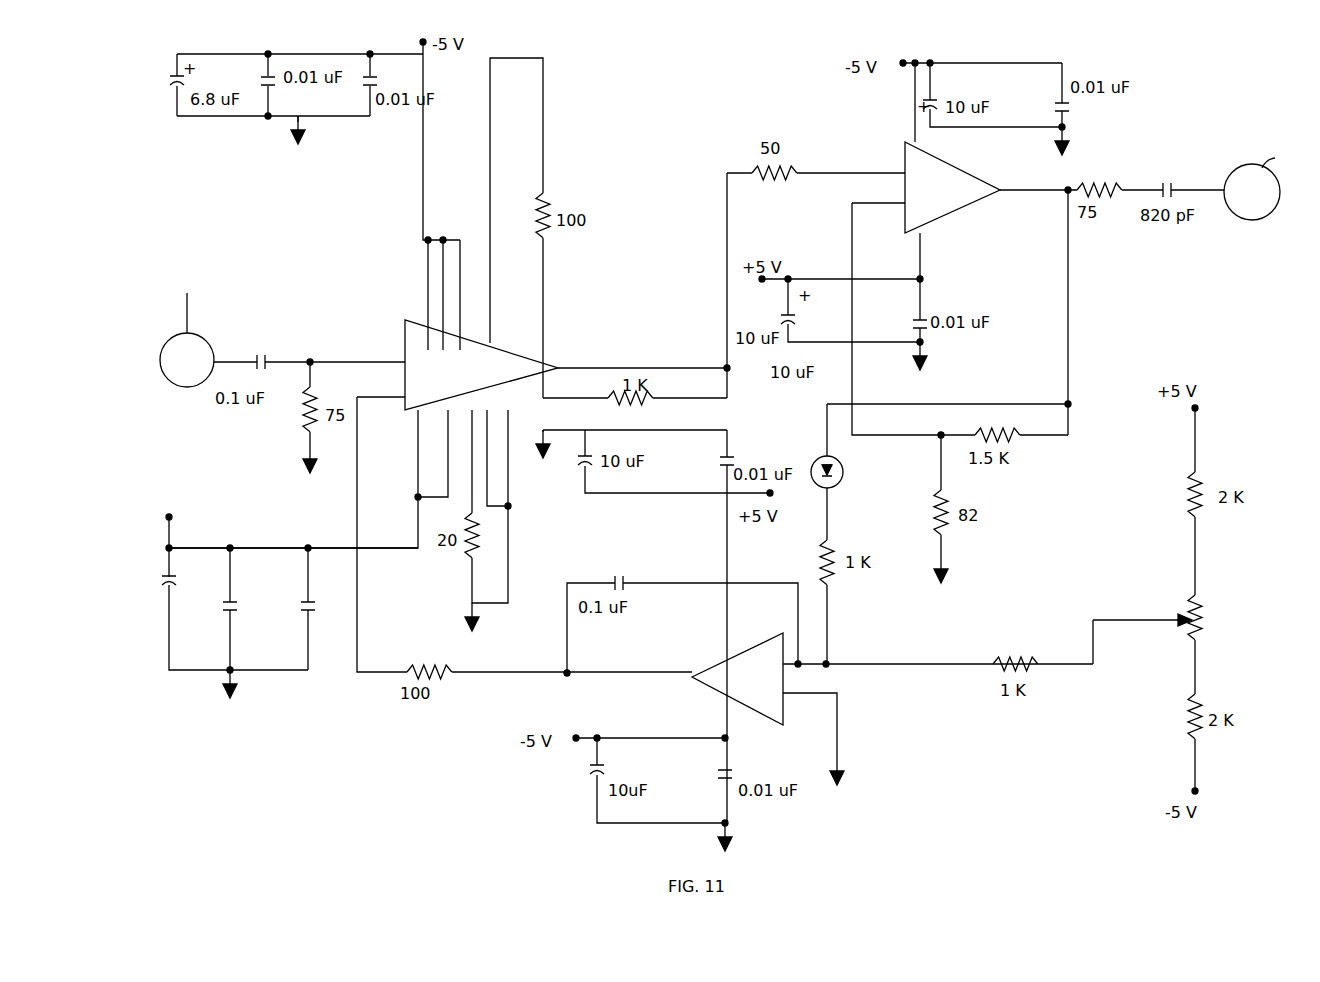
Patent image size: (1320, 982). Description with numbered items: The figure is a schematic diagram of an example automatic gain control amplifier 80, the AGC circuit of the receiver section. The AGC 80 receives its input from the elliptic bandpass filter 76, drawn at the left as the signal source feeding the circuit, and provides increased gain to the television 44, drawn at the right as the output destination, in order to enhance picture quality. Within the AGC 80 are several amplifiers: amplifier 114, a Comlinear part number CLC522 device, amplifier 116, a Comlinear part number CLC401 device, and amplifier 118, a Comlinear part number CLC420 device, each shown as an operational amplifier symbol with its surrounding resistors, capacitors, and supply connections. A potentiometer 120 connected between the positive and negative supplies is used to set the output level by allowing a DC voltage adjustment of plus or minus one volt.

The elliptic bandpass filter 76 is at (235, 324).
The automatic gain control amplifier 80 is at (145, 732).
The amplifier 114 is at (488, 368).
The amplifier 116 is at (948, 190).
The amplifier 118 is at (738, 683).
The potentiometer 120 is at (1138, 566).
The television 44 is at (1261, 183).